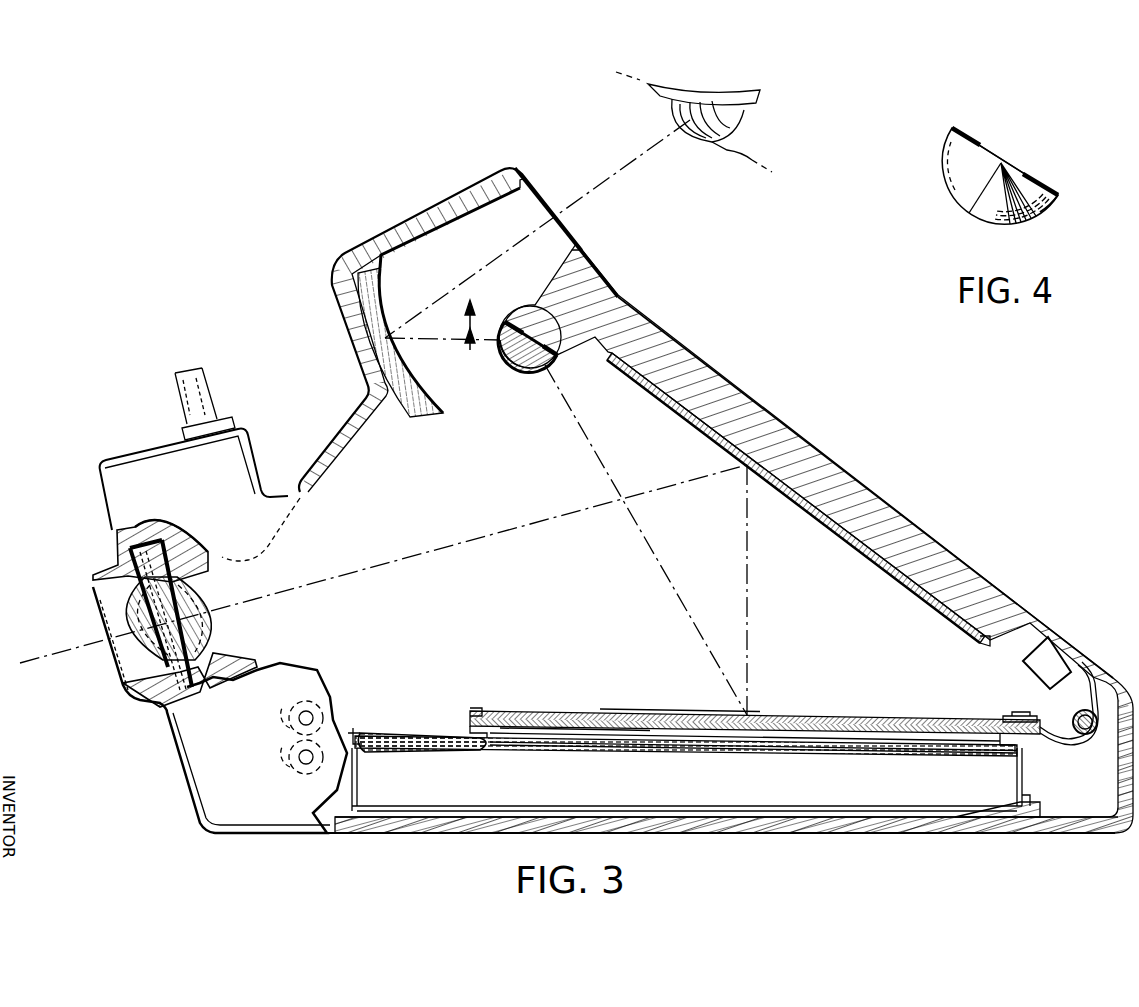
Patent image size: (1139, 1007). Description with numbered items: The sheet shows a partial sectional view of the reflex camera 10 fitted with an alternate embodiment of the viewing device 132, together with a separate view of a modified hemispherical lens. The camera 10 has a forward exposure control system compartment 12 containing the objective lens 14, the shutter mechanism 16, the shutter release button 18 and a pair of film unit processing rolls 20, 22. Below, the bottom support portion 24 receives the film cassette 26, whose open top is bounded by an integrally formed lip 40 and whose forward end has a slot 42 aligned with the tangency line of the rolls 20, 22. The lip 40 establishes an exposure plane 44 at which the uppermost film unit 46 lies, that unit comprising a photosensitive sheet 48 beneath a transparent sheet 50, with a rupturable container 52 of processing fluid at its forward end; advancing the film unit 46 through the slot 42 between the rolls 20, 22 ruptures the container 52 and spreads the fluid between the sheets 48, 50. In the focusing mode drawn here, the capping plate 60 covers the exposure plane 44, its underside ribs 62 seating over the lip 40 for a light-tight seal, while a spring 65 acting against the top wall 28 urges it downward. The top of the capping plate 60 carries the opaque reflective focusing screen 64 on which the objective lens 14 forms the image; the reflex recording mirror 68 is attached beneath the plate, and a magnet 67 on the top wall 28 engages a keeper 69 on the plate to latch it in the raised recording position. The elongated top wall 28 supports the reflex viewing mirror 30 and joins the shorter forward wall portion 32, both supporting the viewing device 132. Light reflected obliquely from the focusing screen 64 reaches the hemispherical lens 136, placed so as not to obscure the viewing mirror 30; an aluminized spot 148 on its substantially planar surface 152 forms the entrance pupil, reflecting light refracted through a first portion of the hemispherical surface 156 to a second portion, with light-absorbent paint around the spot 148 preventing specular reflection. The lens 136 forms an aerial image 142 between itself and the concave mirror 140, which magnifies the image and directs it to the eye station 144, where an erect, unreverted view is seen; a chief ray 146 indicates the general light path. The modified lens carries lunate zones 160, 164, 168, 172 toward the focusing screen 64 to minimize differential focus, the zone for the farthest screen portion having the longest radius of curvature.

In FIG. 3, the reflex camera 10 is at (845, 412).
In FIG. 3, the exposure control system compartment 12 is at (100, 492).
In FIG. 3, the objective lens 14 is at (130, 612).
In FIG. 3, the shutter mechanism 16 is at (190, 545).
In FIG. 3, the shutter release button 18 is at (190, 372).
In FIG. 3, the film unit processing roll 20 is at (286, 718).
In FIG. 3, the film unit processing roll 22 is at (287, 757).
In FIG. 3, the bottom support portion 24 is at (845, 833).
In FIG. 3, the film cassette 26 is at (615, 784).
In FIG. 3, the top wall section 28 is at (888, 498).
In FIG. 3, the reflex viewing mirror 30 is at (853, 548).
In FIG. 3, the forward wall portion 32 is at (300, 480).
In FIG. 3, the lip 40 is at (498, 741).
In FIG. 3, the slot 42 is at (352, 733).
In FIG. 3, the exposure plane 44 is at (545, 712).
In FIG. 3, the film unit 46 is at (696, 749).
In FIG. 3, the photosensitive sheet 48 is at (766, 749).
In FIG. 3, the transparent sheet 50 is at (840, 742).
In FIG. 3, the rupturable container 52 is at (410, 752).
In FIG. 3, the capping plate 60 is at (862, 716).
In FIG. 3, the ribs 62 is at (470, 712).
In FIG. 3, the focusing screen 64 is at (686, 712).
In FIG. 3, the spring 65 is at (1098, 684).
In FIG. 3, the magnet 67 is at (1057, 660).
In FIG. 3, the reflex recording mirror 68 is at (618, 712).
In FIG. 3, the keeper 69 is at (1010, 713).
In FIG. 3, the viewing device 132 is at (432, 213).
In FIG. 3, the hemispherical lens 136 is at (527, 374).
In FIG. 4, the hemispherical lens 136 is at (948, 190).
In FIG. 3, the concave mirror 140 is at (388, 336).
In FIG. 3, the aerial image 142 is at (468, 332).
In FIG. 3, the eye station 144 is at (692, 86).
In FIG. 3, the chief ray 146 is at (495, 520).
In FIG. 3, the aluminized spot 148 is at (541, 312).
In FIG. 4, the aluminized spot 148 is at (993, 152).
In FIG. 3, the planar surface 152 is at (548, 368).
In FIG. 4, the planar surface 152 is at (968, 138).
In FIG. 3, the hemispherical surface 156 is at (510, 365).
In FIG. 4, the lunate zone 160 is at (990, 222).
In FIG. 4, the lunate zone 164 is at (1012, 228).
In FIG. 4, the lunate zone 168 is at (1028, 228).
In FIG. 4, the lunate zone 172 is at (1057, 204).